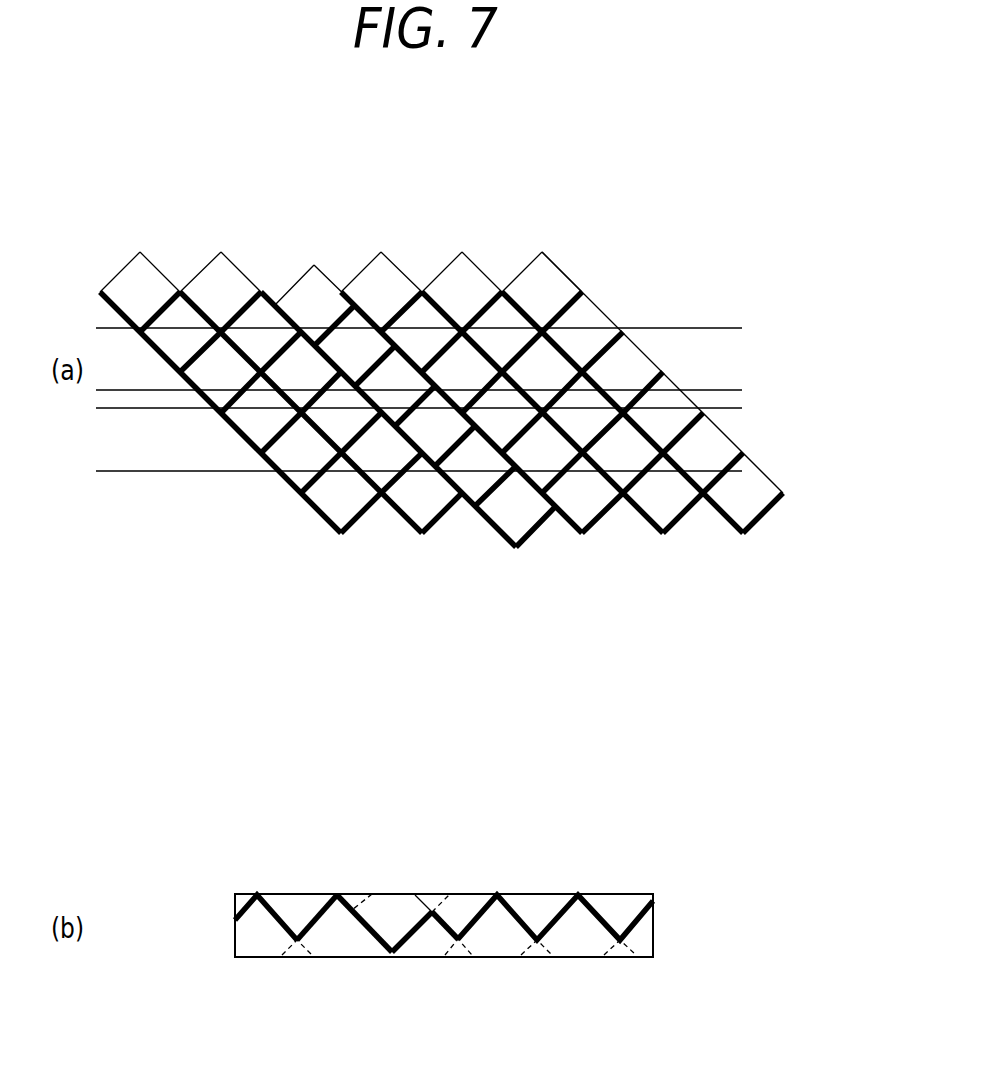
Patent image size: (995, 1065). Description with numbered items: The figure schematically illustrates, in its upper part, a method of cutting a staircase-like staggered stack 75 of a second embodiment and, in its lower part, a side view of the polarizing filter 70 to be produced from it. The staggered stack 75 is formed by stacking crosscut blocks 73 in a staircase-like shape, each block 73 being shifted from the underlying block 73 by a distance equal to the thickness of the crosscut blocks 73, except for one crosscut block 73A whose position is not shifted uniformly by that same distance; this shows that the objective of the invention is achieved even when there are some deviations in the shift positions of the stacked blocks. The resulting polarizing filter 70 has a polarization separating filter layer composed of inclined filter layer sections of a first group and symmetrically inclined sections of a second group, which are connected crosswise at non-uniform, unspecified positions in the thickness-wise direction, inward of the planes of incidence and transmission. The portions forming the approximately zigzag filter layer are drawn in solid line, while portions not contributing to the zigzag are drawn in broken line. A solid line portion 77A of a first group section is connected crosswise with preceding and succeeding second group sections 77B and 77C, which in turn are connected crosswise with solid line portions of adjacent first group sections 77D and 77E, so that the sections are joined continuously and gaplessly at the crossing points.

The polarizing filter 70 is at (607, 882).
The crosscut block 73 is at (359, 515).
The crosscut block 73A is at (533, 529).
The staggered stack 75 is at (580, 260).
The solid line portion of first group inclined filter layer section 77A is at (362, 920).
The second group inclined filter layer section 77B is at (315, 922).
The second group inclined filter layer section 77C is at (410, 934).
The first group inclined filter layer section 77D is at (270, 912).
The first group inclined filter layer section 77E is at (447, 928).